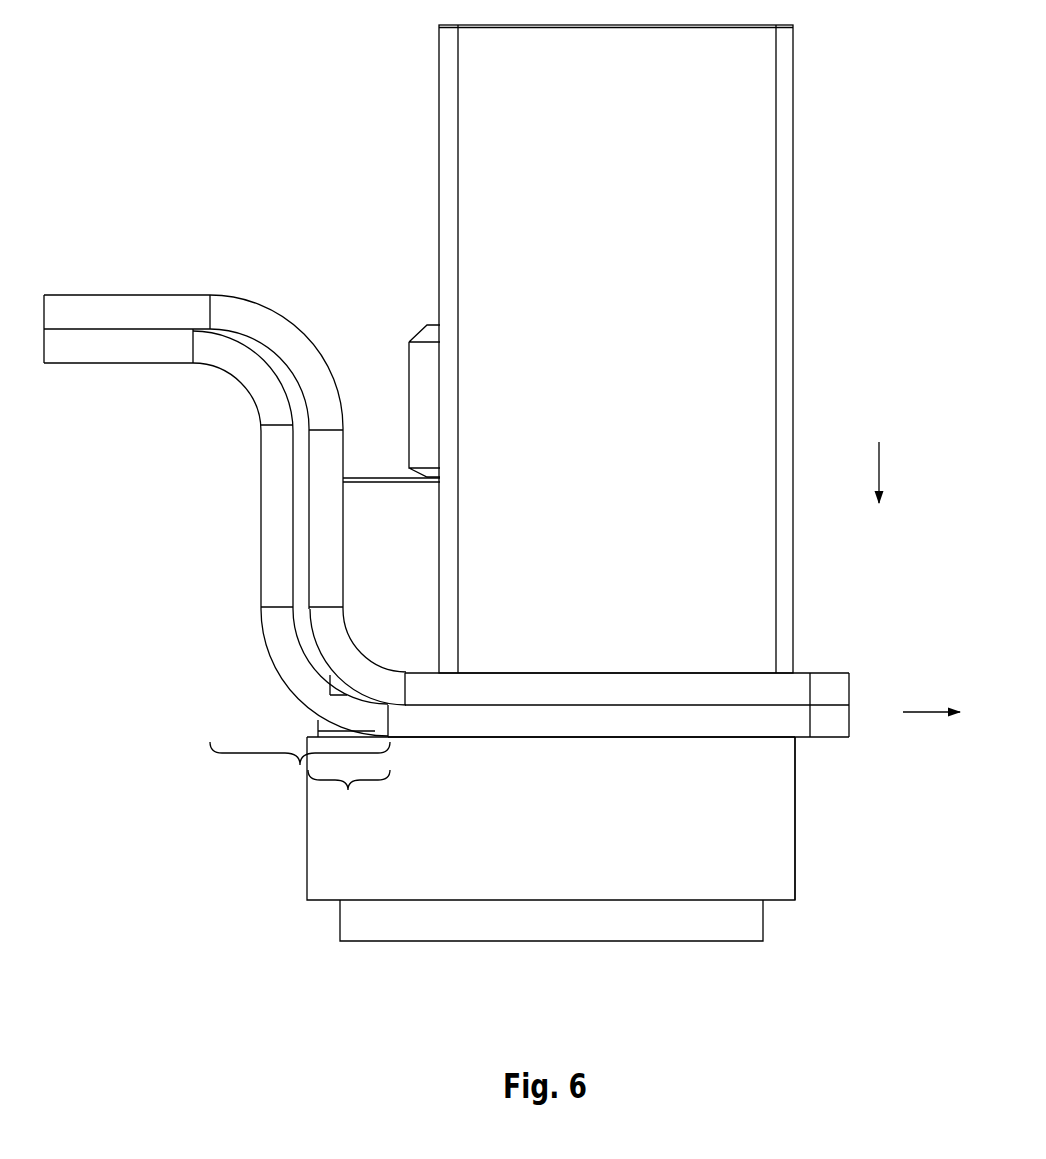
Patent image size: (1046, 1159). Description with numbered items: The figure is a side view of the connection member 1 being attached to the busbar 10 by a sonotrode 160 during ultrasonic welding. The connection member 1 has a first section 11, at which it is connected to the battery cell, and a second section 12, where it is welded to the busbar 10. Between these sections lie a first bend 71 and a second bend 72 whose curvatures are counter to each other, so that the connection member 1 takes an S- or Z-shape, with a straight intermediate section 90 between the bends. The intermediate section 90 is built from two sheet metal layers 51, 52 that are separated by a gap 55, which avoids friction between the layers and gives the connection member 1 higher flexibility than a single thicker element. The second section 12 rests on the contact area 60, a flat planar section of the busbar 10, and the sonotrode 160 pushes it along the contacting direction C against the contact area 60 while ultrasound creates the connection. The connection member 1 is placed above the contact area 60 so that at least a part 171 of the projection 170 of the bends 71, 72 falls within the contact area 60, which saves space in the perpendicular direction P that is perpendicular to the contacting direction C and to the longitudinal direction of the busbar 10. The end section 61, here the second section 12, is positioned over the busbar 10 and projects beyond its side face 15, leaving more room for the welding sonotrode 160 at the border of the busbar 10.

The connection member 1 is at (453, 505).
The busbar 10 is at (600, 867).
The first section 11 is at (122, 268).
The second section 12 is at (667, 755).
The side face 15 is at (827, 782).
The layer 51 is at (322, 438).
The layer 52 is at (270, 468).
The gap 55 is at (300, 597).
The contact area 60 is at (547, 737).
The end section 61 is at (829, 653).
The first bend 71 is at (303, 311).
The second bend 72 is at (252, 683).
The intermediate section 90 is at (261, 492).
The sonotrode 160 is at (812, 393).
The projection 170 is at (300, 768).
The part 171 is at (348, 792).
The contacting direction C is at (879, 465).
The perpendicular direction P is at (935, 708).